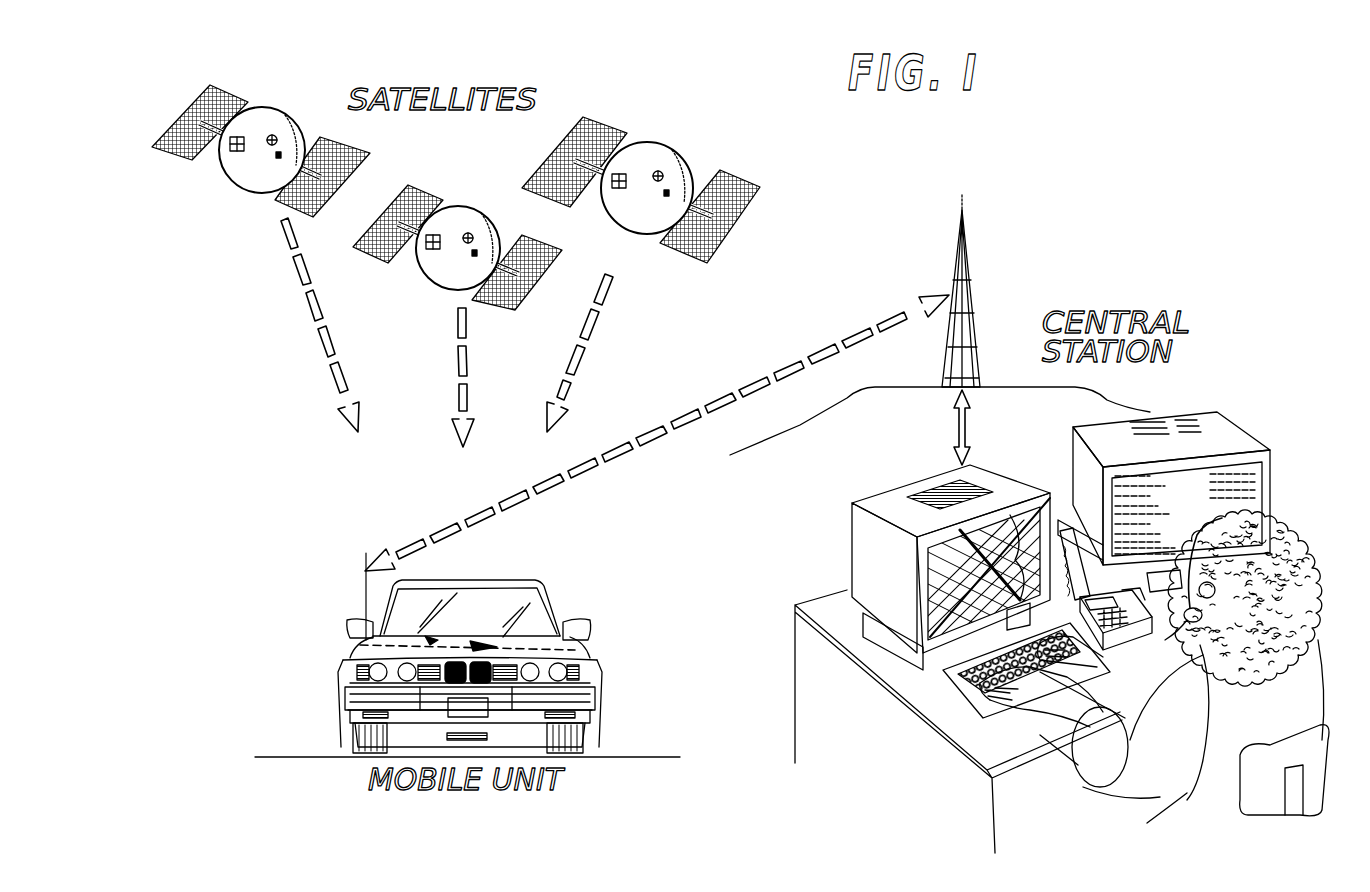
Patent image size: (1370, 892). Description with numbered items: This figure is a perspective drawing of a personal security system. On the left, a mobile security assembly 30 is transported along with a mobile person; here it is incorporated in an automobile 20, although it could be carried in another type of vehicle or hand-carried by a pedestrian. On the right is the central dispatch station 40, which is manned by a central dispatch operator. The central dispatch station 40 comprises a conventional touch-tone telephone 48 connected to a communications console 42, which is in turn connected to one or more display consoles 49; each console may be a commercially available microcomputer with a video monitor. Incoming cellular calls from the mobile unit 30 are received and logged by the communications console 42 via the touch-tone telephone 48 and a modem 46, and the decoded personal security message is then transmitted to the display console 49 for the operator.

The automobile 20 is at (553, 575).
The mobile security assembly 30 is at (590, 650).
The central dispatch station 40 is at (1217, 325).
The communications console 42 is at (1222, 390).
The modem 46 is at (1128, 660).
The touch-tone telephone 48 is at (1163, 632).
The display console 49 is at (860, 481).